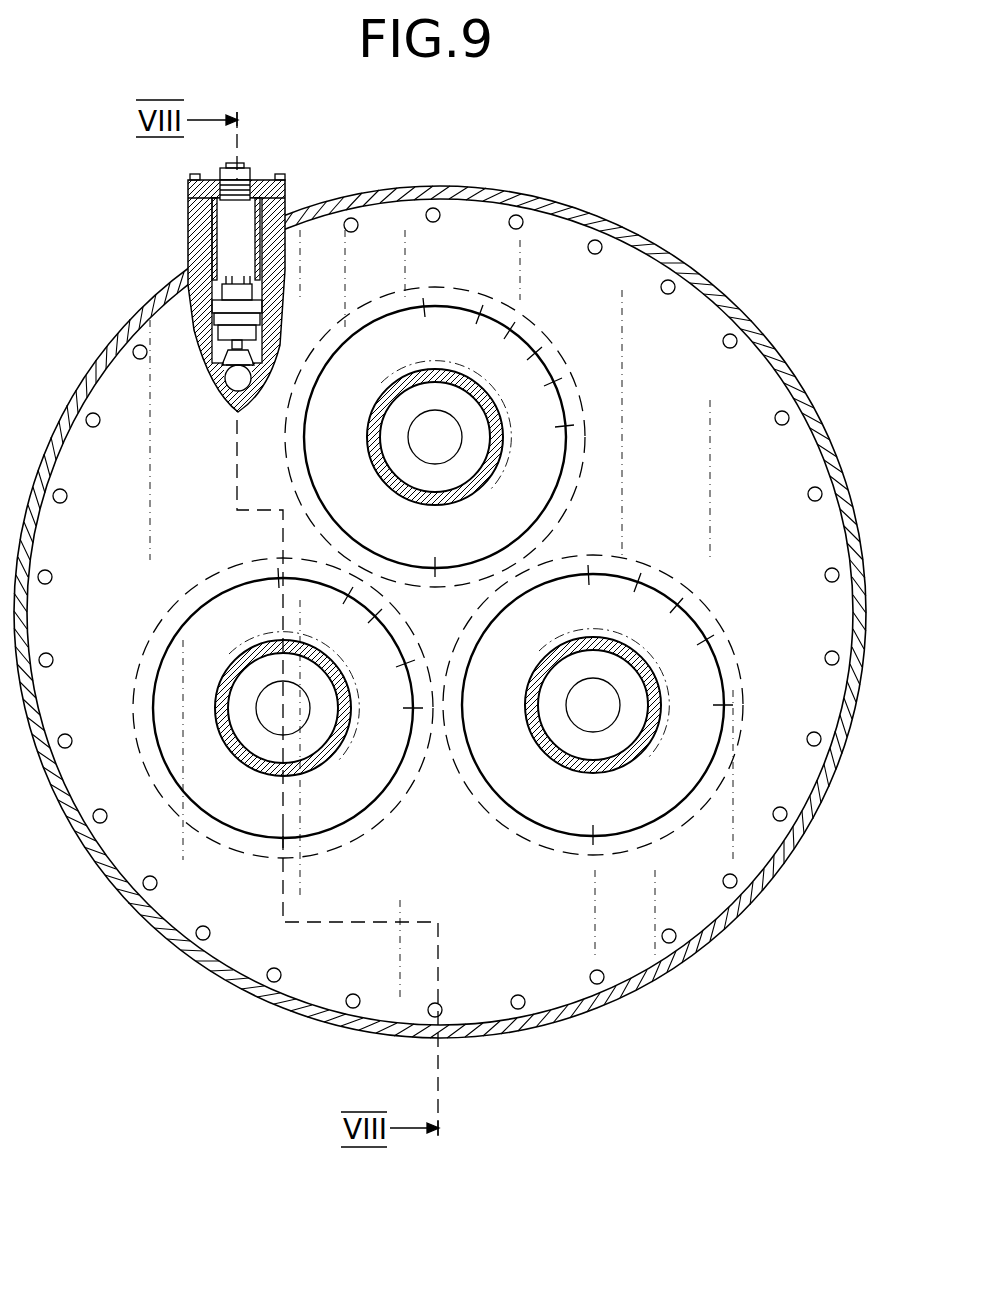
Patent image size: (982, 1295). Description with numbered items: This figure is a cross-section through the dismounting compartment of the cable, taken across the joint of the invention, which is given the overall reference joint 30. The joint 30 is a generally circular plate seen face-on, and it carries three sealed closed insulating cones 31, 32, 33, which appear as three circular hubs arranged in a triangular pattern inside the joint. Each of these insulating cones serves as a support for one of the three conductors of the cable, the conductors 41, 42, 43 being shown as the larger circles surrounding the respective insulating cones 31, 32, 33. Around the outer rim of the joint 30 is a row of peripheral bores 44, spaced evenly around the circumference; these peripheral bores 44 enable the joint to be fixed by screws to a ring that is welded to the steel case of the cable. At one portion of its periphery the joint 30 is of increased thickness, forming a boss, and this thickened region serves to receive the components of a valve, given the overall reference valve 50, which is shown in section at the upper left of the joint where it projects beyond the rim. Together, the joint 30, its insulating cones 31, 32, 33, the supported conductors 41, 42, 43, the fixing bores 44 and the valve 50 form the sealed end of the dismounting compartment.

The joint 30 is at (478, 222).
The insulating cone 31 is at (377, 405).
The insulating cone 32 is at (220, 728).
The insulating cone 33 is at (580, 772).
The conductor 41 is at (461, 335).
The conductor 42 is at (178, 654).
The conductor 43 is at (693, 657).
The peripheral bores 44 is at (665, 280).
The valve 50 is at (262, 180).